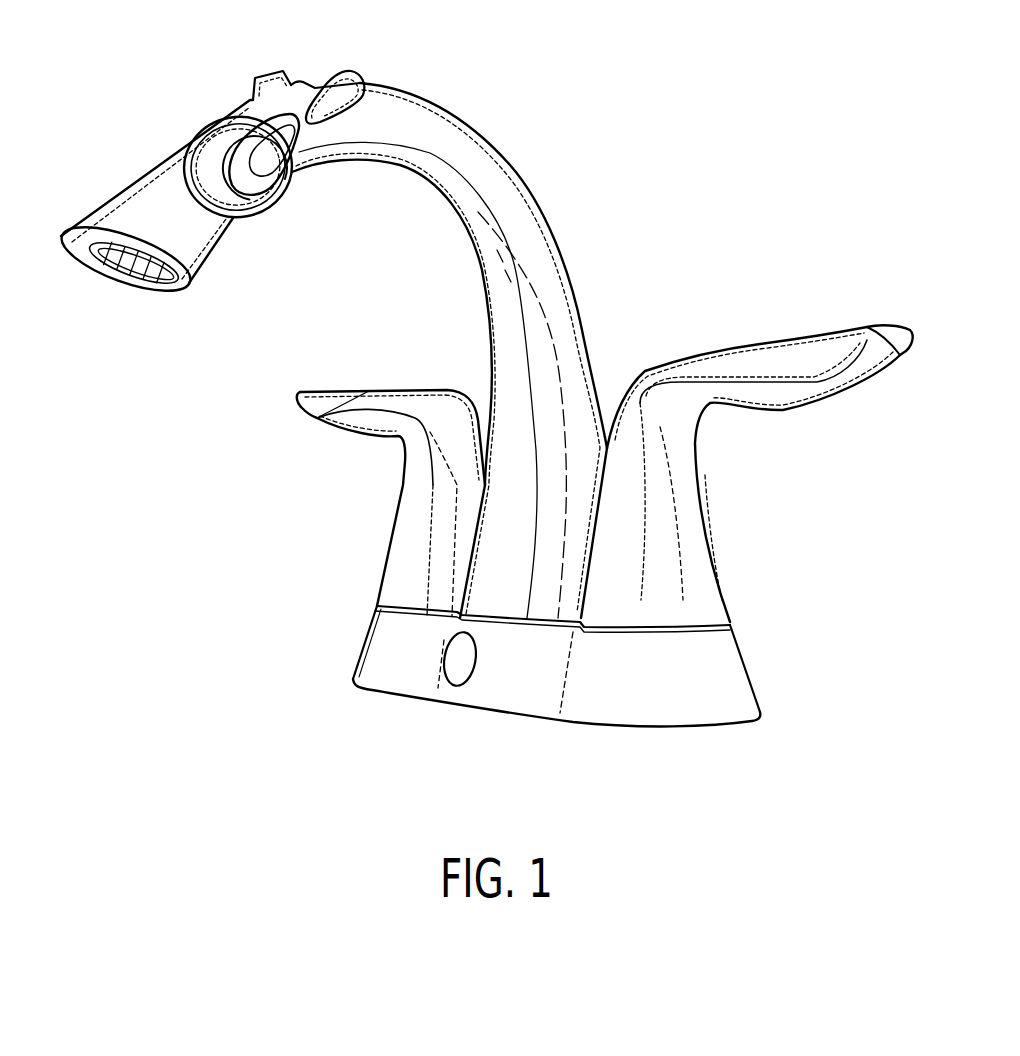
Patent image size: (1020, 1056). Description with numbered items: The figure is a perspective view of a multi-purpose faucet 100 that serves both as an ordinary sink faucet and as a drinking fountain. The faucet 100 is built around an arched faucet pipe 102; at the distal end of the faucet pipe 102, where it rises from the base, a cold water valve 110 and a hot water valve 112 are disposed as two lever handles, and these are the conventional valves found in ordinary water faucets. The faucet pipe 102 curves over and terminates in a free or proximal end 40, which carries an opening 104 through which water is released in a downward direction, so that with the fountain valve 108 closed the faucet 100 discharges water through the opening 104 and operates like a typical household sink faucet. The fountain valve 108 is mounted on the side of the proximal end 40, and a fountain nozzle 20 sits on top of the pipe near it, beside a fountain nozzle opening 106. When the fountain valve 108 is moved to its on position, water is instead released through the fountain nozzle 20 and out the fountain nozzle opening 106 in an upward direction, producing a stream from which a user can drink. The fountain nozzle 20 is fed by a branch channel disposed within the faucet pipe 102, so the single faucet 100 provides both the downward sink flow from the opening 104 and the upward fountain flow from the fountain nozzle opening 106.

The multi-purpose faucet 100 is at (770, 25).
The faucet pipe 102 is at (567, 250).
The free or proximal end 40 is at (96, 180).
The opening 104 is at (126, 288).
The fountain nozzle opening 106 is at (255, 50).
The fountain nozzle 20 is at (288, 62).
The fountain valve 108 is at (282, 220).
The cold water valve 110 is at (722, 568).
The hot water valve 112 is at (403, 518).